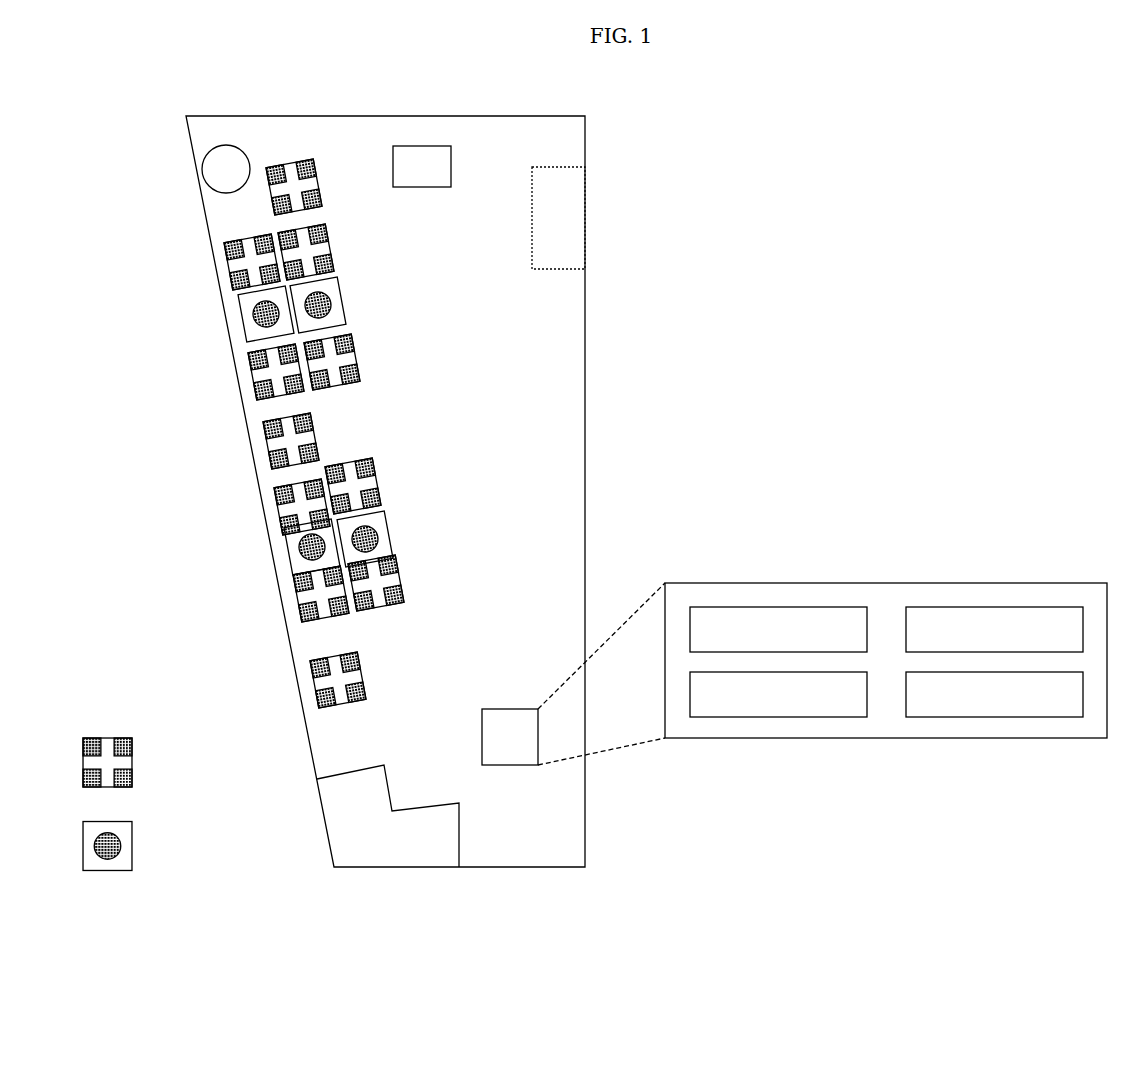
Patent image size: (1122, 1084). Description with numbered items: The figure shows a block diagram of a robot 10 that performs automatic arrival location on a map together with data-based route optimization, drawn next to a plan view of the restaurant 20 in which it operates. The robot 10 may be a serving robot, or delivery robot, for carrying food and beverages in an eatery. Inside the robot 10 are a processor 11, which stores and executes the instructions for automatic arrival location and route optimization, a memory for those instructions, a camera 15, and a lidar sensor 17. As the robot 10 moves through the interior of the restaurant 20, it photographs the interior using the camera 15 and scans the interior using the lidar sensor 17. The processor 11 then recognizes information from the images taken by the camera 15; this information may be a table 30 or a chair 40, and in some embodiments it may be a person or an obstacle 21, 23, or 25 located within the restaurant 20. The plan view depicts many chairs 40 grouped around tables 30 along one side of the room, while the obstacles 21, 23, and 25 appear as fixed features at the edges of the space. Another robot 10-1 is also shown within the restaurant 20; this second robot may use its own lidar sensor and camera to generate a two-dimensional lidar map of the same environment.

The robot 10 is at (1020, 583).
The another robot 10-1 is at (421, 160).
The processor 11 is at (750, 717).
The camera 15 is at (752, 605).
The lidar sensor 17 is at (967, 605).
The restaurant 20 is at (656, 129).
The obstacle 21 is at (340, 825).
The obstacle 23 is at (570, 223).
The obstacle 25 is at (211, 173).
The table 30 is at (206, 860).
The chair 40 is at (206, 775).